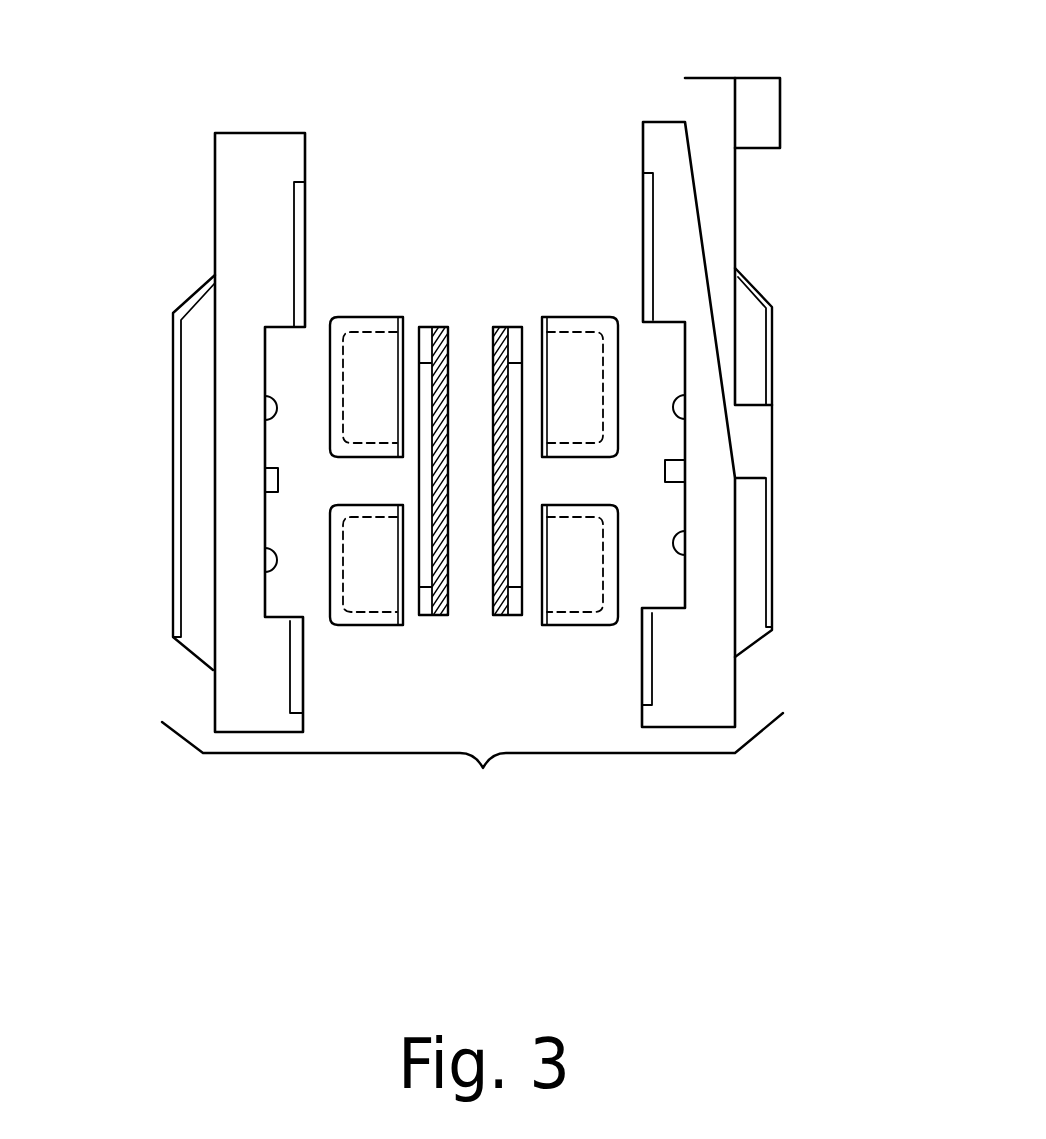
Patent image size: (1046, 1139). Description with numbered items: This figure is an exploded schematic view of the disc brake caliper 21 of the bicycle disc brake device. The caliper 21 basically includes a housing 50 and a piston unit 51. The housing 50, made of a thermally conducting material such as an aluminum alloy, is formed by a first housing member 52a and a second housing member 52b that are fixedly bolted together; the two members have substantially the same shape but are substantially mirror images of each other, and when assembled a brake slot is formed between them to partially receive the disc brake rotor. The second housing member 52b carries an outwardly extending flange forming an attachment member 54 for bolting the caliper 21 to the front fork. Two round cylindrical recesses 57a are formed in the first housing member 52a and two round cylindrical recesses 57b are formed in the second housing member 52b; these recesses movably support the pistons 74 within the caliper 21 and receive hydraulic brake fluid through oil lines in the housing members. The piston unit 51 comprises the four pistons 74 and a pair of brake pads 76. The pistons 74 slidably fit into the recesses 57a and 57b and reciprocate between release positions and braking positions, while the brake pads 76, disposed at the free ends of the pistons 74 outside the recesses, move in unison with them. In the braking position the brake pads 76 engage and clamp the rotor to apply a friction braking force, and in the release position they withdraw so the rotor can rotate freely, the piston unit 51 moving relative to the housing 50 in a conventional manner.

The disc brake caliper 21 is at (830, 146).
The housing 50 is at (251, 130).
The piston unit 51 is at (472, 264).
The first housing member 52a is at (173, 363).
The second housing member 52b is at (775, 362).
The attachment member 54 is at (730, 78).
The round cylindrical recesses 57a is at (265, 563).
The round cylindrical recesses 57b is at (687, 553).
The pistons 74 is at (365, 317).
The brake pads 76 is at (438, 615).